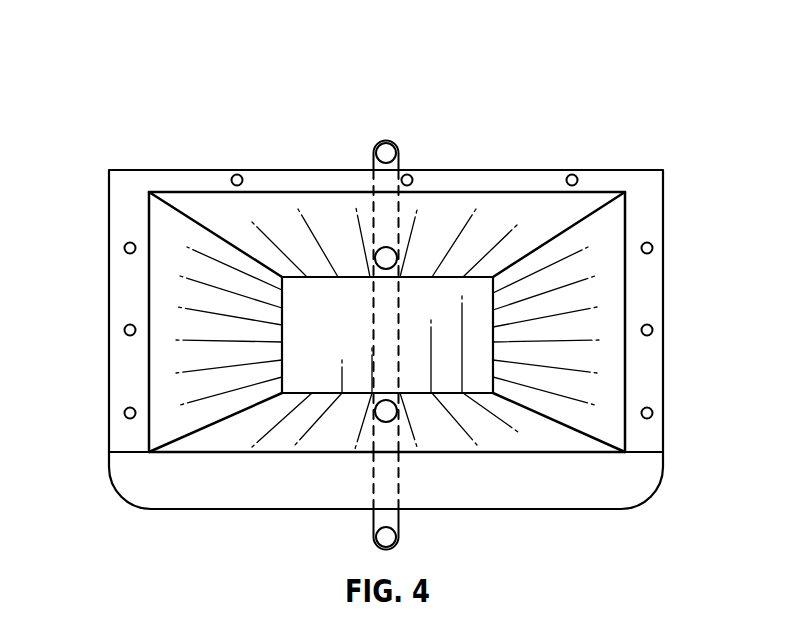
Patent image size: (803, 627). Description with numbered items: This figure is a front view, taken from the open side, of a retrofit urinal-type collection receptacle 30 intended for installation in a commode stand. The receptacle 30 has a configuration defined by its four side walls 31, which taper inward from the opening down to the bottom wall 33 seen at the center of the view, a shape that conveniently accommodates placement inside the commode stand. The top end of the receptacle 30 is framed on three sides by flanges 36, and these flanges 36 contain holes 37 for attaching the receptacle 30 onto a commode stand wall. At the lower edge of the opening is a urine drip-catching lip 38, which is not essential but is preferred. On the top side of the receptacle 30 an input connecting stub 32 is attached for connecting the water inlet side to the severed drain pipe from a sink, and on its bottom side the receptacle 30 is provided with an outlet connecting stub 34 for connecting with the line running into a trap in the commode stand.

The retrofit urinal-type collection receptacle 30 is at (552, 128).
The side walls 31 is at (162, 380).
The input connecting stub 32 is at (372, 165).
The bottom wall 33 is at (400, 342).
The outlet connecting stub 34 is at (392, 518).
The flanges 36 is at (172, 180).
The holes 37 is at (654, 248).
The urine drip-catching lip 38 is at (647, 472).